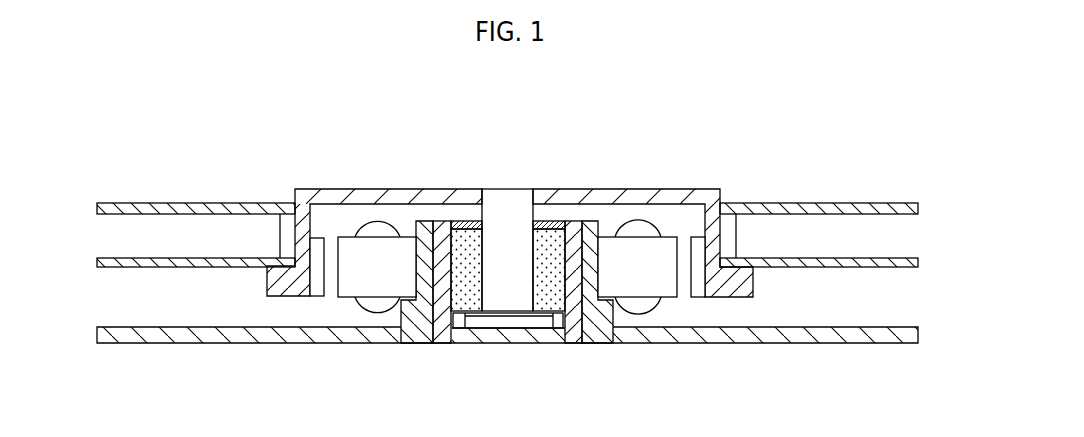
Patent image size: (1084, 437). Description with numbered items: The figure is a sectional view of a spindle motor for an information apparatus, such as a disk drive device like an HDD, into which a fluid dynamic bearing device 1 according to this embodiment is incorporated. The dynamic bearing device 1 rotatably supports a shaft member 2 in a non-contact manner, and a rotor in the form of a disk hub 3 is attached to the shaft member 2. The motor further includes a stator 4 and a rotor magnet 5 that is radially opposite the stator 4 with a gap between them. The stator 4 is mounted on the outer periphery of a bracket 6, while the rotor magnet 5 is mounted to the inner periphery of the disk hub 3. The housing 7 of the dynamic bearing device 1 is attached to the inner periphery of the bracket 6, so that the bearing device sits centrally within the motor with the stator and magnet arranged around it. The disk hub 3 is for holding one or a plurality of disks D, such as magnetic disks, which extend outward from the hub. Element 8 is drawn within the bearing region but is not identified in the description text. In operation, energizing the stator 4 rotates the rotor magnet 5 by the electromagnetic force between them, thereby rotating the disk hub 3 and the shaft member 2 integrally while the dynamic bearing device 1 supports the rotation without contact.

The fluid dynamic bearing device 1 is at (565, 222).
The shaft member 2 is at (523, 187).
The rotor (disk hub) 3 is at (697, 193).
The stator 4 is at (667, 286).
The rotor magnet 5 is at (695, 300).
The bracket 6 is at (600, 336).
The housing 7 is at (440, 231).
The elastic member 8 is at (548, 227).
The disk D is at (838, 203).